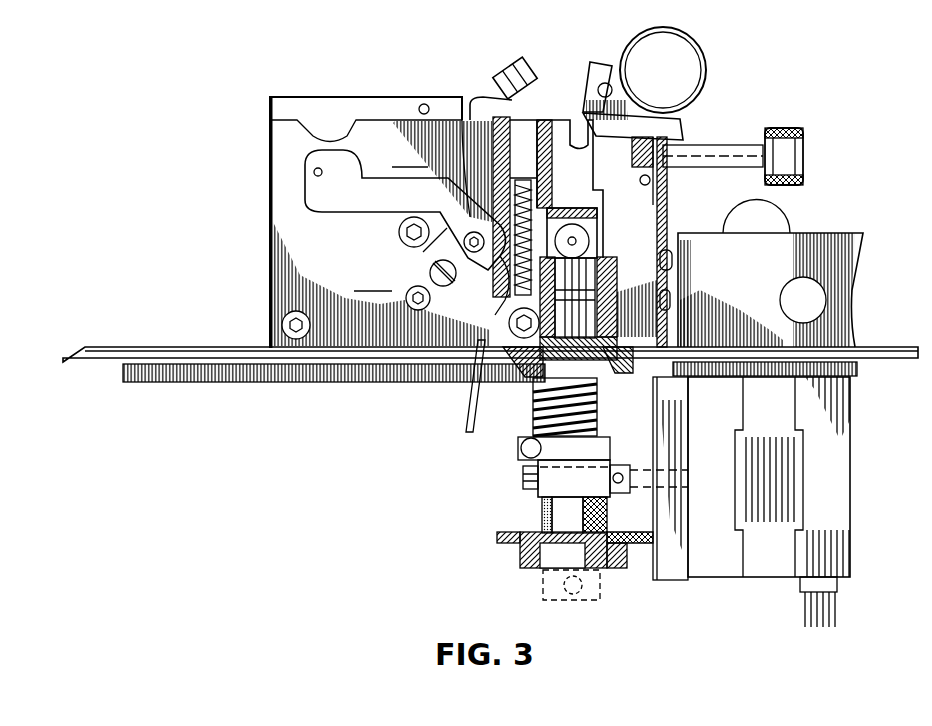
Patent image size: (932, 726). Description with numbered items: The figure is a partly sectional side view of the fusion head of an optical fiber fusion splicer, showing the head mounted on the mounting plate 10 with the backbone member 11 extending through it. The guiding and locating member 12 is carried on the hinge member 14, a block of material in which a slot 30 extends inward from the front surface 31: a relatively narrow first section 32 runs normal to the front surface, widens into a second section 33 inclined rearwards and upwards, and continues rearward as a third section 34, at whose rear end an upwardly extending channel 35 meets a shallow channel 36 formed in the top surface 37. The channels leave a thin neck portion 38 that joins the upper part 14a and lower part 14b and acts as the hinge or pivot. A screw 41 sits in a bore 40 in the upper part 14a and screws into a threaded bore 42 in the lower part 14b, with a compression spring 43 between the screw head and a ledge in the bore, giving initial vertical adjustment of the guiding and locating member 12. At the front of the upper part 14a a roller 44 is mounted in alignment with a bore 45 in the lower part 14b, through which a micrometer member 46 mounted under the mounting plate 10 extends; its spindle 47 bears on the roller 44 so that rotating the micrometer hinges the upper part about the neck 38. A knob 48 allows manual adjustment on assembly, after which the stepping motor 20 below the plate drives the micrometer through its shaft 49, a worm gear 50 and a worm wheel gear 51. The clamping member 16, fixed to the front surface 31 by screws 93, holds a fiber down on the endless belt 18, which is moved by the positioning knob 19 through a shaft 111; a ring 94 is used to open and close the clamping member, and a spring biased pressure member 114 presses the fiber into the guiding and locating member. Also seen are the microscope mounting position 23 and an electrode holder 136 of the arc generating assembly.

The mounting plate 10 is at (160, 347).
The backbone member 11 is at (287, 100).
The guiding and locating member 12 is at (552, 132).
The hinge member 14 is at (270, 283).
The upper part of hinge member 14a is at (414, 156).
The lower part of hinge member 14b is at (377, 280).
The clamping member 16 is at (684, 108).
The endless belt 18 is at (585, 168).
The positioning knob 19 is at (790, 130).
The stepping motor 20 is at (840, 540).
The microscope mounting position 23 is at (862, 252).
The slot 30 is at (370, 222).
The front surface 31 is at (678, 233).
The first section of slot 32 is at (460, 386).
The second section of slot 33 is at (426, 257).
The third section of slot 34 is at (347, 198).
The upwardly extending channel 35 is at (320, 153).
The shallow channel 36 is at (332, 132).
The top surface 37 is at (392, 118).
The thin neck portion 38 is at (325, 141).
The bore 40 is at (487, 100).
The screw 41 is at (492, 165).
The threaded bore 42 is at (505, 298).
The compression spring 43 is at (492, 275).
The roller 44 is at (620, 222).
The bore 45 is at (673, 258).
The micrometer member 46 is at (534, 382).
The spindle 47 is at (612, 250).
The knob 48 is at (555, 517).
The shaft 49 is at (638, 543).
The worm gear 50 is at (536, 492).
The worm wheel gear 51 is at (520, 476).
The screws 93 is at (677, 327).
The ring 94 is at (704, 60).
The shaft 111 is at (718, 147).
The pressure member 114 is at (603, 63).
The electrode holder 136 is at (512, 67).